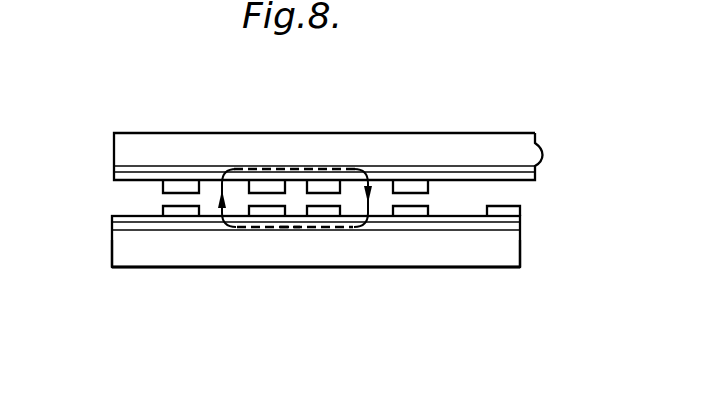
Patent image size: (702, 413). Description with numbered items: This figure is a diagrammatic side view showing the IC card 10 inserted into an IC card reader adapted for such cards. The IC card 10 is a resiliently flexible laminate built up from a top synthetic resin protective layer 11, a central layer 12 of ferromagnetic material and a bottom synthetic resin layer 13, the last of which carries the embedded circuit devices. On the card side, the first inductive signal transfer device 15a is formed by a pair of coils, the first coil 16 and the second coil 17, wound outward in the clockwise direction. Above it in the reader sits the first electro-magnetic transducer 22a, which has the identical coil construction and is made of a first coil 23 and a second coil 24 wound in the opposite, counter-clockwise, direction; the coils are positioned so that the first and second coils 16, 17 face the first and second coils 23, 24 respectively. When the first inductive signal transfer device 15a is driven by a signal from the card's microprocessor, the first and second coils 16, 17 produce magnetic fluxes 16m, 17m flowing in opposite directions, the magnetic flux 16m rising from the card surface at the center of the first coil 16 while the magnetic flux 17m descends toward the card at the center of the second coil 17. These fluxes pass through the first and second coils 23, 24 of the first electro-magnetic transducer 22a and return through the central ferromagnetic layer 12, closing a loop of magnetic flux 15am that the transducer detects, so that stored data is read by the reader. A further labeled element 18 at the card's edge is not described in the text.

The IC card 10 is at (528, 232).
The top synthetic resin protective layer 11 is at (114, 220).
The central layer of ferromagnetic material 12 is at (124, 227).
The bottom synthetic resin layer 13 is at (121, 260).
The first inductive signal transfer device 15a is at (324, 238).
The loop of magnetic flux 15am is at (306, 230).
The first coil 16 is at (183, 212).
The magnetic flux 16m is at (221, 209).
The second coil 17 is at (410, 214).
The magnetic flux 17m is at (373, 208).
The lower end pad (19) 18 is at (508, 212).
The first electro-magnetic transducer 22a is at (277, 158).
The first coil 23 is at (182, 188).
The second coil 24 is at (330, 185).